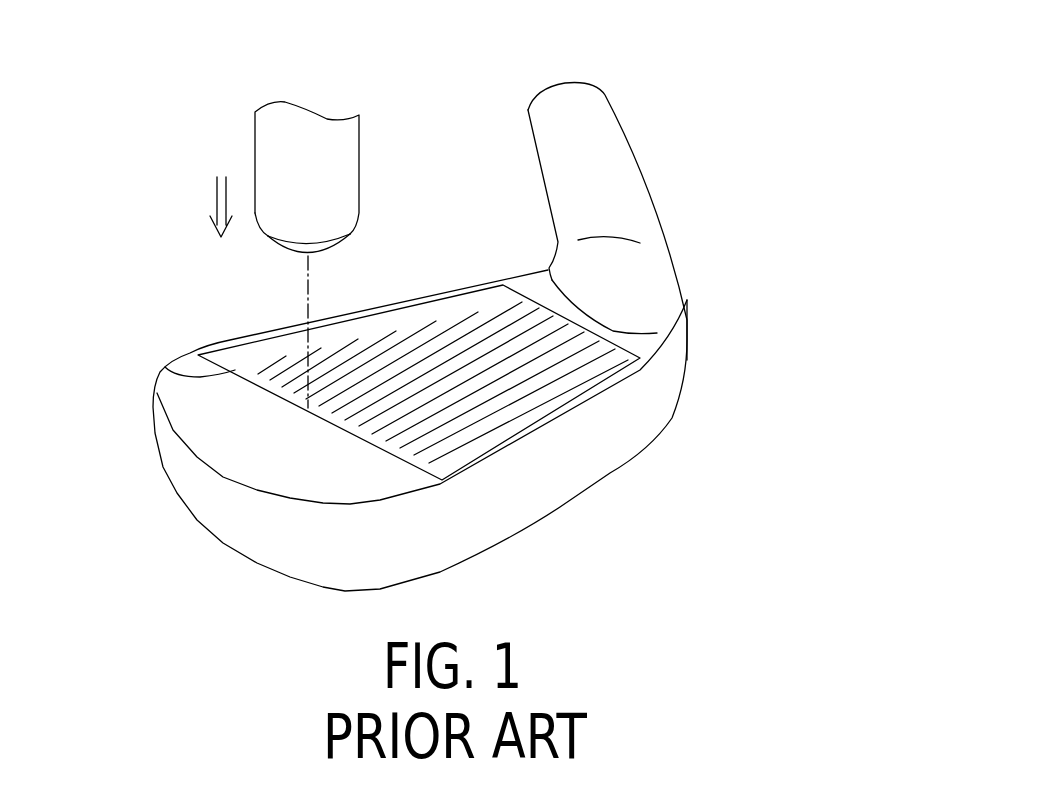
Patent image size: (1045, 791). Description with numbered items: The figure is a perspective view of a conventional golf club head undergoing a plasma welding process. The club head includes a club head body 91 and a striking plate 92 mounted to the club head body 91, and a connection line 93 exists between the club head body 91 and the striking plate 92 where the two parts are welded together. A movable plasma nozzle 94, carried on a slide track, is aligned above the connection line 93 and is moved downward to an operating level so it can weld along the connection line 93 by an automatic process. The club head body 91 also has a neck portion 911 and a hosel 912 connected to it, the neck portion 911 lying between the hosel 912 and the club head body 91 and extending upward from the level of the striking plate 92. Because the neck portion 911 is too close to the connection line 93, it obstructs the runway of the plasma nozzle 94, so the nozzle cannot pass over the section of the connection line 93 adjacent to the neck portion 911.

The club head body 91 is at (558, 480).
The neck portion 911 is at (633, 310).
The hosel 912 is at (618, 153).
The striking plate 92 is at (483, 325).
The connection line 93 is at (166, 368).
The plasma nozzle 94 is at (270, 160).